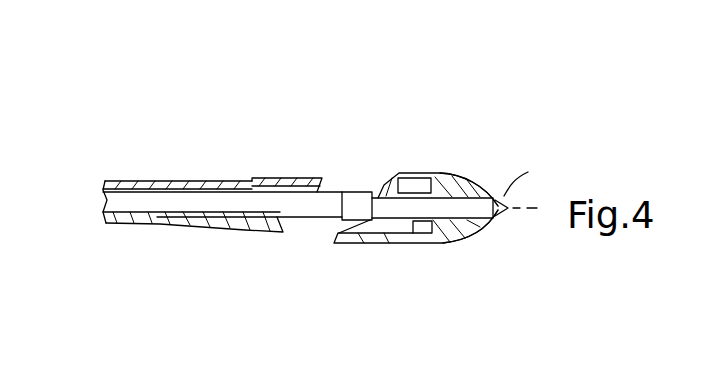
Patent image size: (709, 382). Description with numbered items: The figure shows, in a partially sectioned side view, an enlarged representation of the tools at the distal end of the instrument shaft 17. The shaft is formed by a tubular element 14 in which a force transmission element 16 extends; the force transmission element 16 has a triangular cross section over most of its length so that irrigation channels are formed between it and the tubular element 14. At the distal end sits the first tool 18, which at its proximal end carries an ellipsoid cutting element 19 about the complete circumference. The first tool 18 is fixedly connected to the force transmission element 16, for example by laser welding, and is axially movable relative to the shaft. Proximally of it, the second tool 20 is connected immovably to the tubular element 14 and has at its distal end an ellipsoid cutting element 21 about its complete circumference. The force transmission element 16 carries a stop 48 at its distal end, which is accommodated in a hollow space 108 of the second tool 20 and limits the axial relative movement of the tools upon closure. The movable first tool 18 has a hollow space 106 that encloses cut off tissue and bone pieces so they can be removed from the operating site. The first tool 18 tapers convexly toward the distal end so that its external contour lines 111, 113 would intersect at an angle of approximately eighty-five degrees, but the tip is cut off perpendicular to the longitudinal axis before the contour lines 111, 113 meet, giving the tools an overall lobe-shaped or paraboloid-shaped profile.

The catheter device 17 is at (286, 194).
The tubular element 14 is at (138, 182).
The second tool 20 is at (260, 178).
The ellipsoid cutting element 21 is at (323, 180).
The hollow space 106 is at (248, 235).
The force transmission element 16 is at (315, 208).
The stop 48 is at (362, 198).
The first tool 18 is at (453, 177).
The ellipsoid cutting element 19 is at (397, 187).
The hollow space 108 is at (413, 243).
The external contour line 111 is at (473, 180).
The external contour line 113 is at (477, 239).